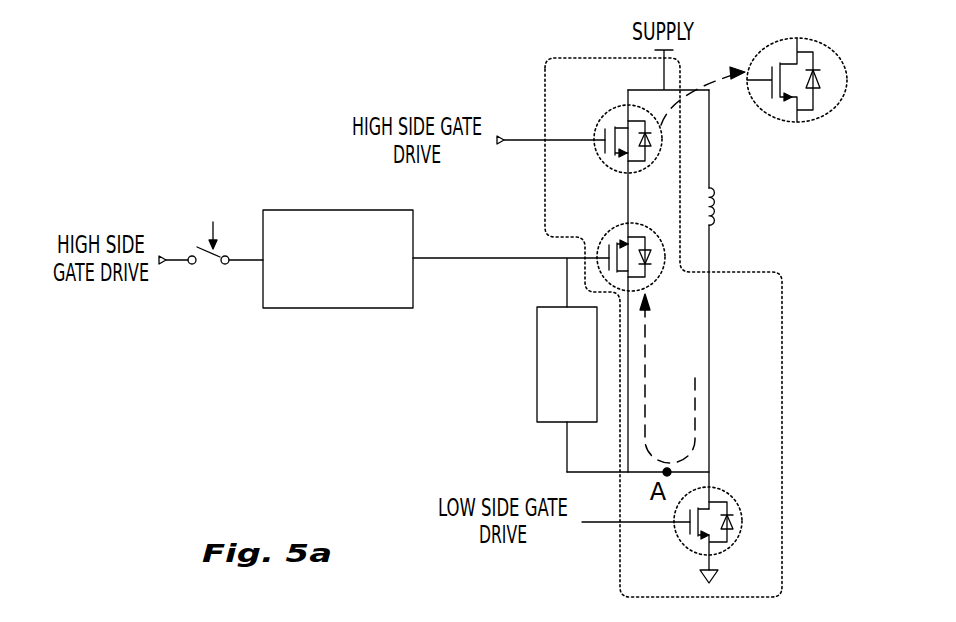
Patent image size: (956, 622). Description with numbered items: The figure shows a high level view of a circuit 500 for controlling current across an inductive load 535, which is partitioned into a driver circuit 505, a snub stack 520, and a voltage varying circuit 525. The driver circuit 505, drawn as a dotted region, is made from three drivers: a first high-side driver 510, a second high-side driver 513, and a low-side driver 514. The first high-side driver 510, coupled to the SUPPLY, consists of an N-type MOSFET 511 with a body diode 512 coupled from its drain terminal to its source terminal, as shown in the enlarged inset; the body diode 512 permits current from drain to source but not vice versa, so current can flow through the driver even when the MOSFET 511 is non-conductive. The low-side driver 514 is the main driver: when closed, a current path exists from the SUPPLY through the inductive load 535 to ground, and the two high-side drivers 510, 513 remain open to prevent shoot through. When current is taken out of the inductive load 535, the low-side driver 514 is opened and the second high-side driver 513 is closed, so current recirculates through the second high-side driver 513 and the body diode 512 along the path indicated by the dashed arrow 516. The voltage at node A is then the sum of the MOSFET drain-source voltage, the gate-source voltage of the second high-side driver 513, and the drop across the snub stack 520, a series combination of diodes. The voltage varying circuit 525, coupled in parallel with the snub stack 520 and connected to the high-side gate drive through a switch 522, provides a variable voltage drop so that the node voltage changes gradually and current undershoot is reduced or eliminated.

The circuit 500 is at (136, 108).
The driver circuit 505 is at (545, 70).
The first high-side driver 510 is at (606, 112).
The MOSFET 511 is at (782, 58).
The body diode 512 is at (820, 76).
The second high-side driver 513 is at (612, 232).
The low-side driver 514 is at (726, 490).
The dashed arrow 516 is at (697, 393).
The snub stack 520 is at (555, 305).
The switch 522 is at (205, 265).
The voltage varying circuit 525 is at (290, 210).
The inductive load 535 is at (718, 205).